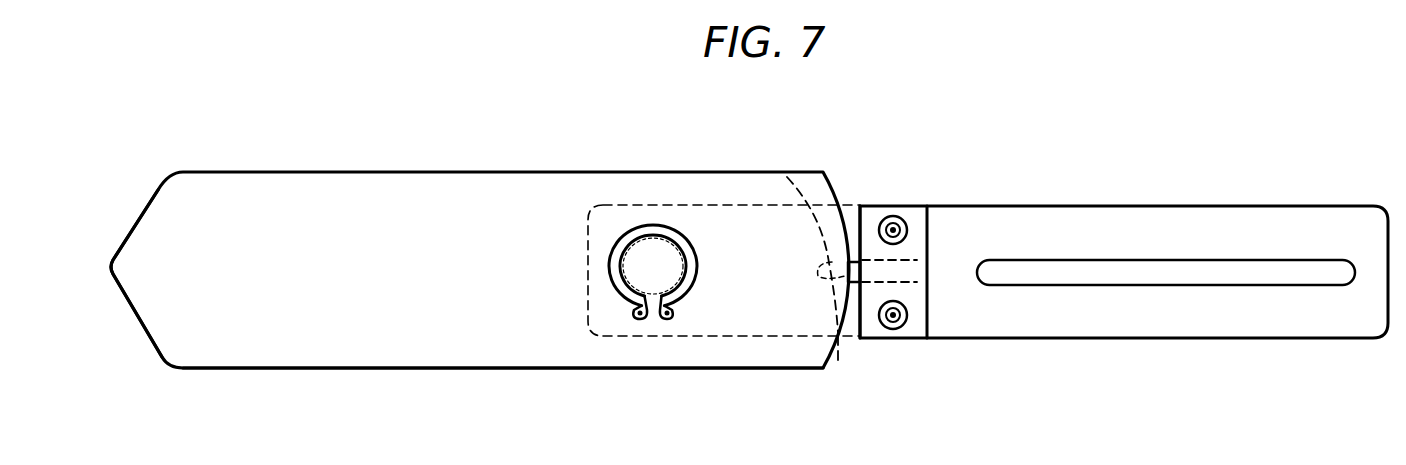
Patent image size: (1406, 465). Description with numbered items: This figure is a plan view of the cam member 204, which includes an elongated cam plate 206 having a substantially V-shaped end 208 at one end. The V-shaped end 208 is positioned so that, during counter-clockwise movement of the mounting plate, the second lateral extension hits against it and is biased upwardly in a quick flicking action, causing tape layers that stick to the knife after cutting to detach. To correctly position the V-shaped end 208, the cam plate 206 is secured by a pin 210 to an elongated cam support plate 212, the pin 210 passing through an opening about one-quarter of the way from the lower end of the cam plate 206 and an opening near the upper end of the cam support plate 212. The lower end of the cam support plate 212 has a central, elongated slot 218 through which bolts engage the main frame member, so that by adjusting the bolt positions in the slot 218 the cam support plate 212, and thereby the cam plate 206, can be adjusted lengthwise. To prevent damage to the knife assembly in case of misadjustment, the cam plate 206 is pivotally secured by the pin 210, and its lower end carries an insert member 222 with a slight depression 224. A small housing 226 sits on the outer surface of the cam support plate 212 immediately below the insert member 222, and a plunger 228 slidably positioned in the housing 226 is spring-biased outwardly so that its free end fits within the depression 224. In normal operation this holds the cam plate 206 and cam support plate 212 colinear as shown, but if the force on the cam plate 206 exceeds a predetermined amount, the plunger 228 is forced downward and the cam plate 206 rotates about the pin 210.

The cam member 204 is at (346, 138).
The cam plate 206 is at (323, 347).
The V-shaped end 208 is at (132, 223).
The pin 210 is at (653, 262).
The cam support plate 212 is at (1047, 217).
The slot 218 is at (1194, 258).
The insert member 222 is at (787, 177).
The depression 224 is at (839, 368).
The housing 226 is at (918, 213).
The plunger 228 is at (850, 263).